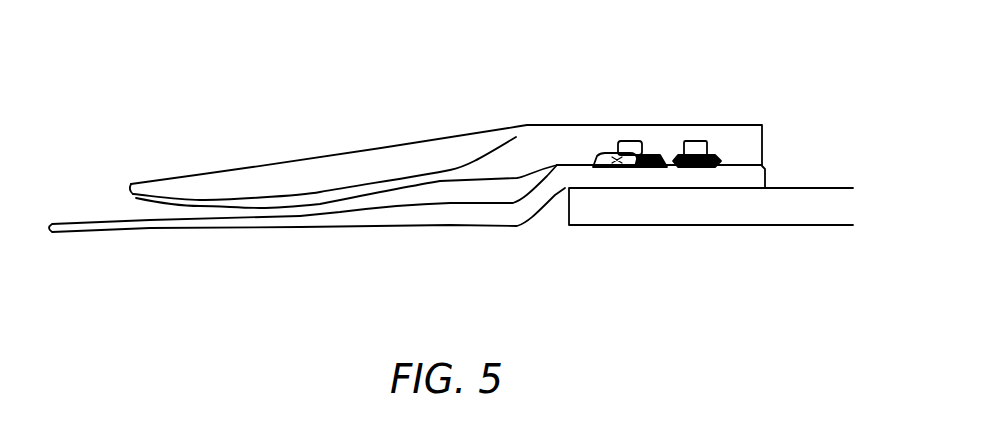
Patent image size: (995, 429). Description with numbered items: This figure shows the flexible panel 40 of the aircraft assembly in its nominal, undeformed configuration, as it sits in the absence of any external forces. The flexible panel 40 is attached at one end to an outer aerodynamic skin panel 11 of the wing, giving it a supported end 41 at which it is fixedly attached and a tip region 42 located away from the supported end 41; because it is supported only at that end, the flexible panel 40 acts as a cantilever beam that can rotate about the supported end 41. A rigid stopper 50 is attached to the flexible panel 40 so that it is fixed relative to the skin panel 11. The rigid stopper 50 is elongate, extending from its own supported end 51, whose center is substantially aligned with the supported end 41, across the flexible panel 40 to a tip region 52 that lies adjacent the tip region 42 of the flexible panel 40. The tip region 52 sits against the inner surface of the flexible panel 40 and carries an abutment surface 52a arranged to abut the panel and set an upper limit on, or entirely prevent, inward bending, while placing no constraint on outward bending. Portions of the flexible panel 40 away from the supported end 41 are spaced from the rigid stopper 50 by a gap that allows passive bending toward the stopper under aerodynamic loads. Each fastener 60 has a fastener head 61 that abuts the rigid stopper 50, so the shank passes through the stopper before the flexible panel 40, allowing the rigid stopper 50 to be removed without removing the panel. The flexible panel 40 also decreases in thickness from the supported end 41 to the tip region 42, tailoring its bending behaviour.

The outer aerodynamic skin panel 11 is at (682, 207).
The flexible panel 40 is at (399, 215).
The supported end 41 is at (737, 172).
The tip region 42 is at (175, 230).
The rigid stopper 50 is at (450, 152).
The supported end 51 is at (737, 138).
The tip region 52 is at (237, 170).
The abutment surface 52a is at (157, 197).
The fastener 60 is at (633, 141).
The fastener head 61 is at (625, 141).